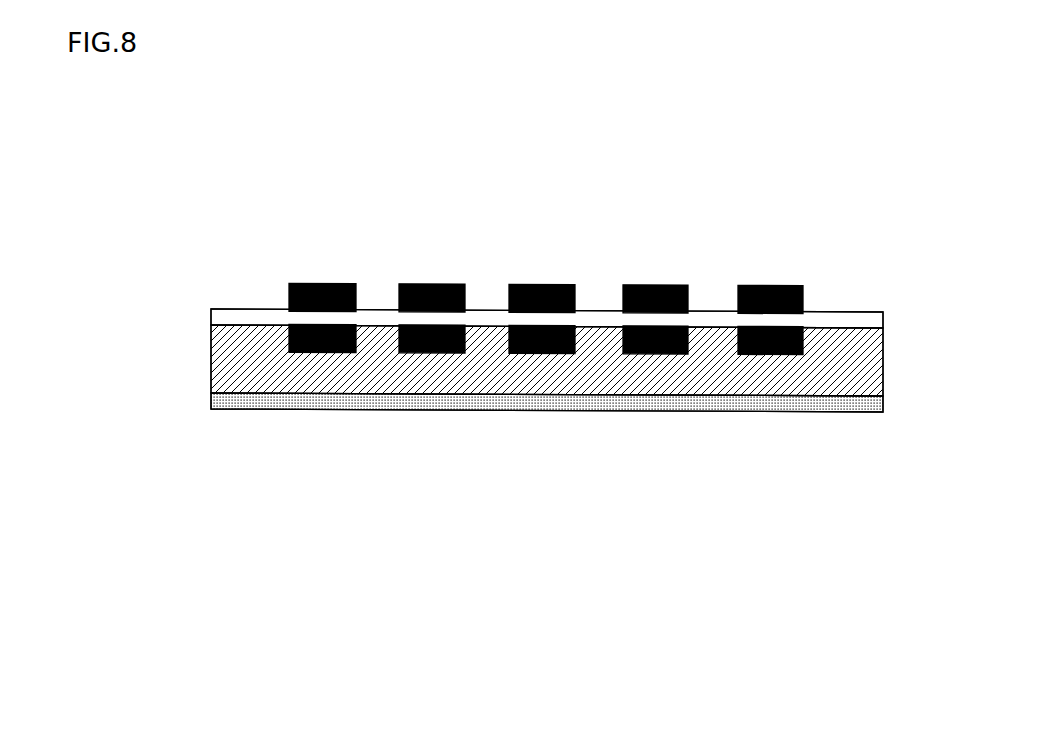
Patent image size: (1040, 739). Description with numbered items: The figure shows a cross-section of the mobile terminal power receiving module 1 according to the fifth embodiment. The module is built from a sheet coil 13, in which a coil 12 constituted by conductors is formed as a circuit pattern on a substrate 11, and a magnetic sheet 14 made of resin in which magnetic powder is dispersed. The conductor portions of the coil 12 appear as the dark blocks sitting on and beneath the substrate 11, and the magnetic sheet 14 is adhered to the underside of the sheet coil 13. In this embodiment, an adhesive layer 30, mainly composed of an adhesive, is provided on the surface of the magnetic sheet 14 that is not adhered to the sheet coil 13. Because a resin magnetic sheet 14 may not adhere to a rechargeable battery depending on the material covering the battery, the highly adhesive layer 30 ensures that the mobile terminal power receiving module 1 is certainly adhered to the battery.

The mobile terminal power receiving module 1 is at (611, 347).
The substrate 11 is at (840, 319).
The coil 12 is at (805, 300).
The sheet coil 13 is at (595, 298).
The magnetic sheet 14 is at (870, 377).
The adhesive layer 30 is at (596, 423).